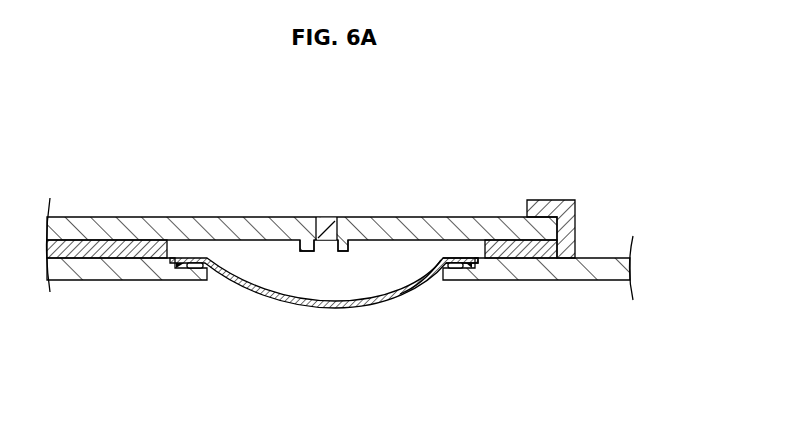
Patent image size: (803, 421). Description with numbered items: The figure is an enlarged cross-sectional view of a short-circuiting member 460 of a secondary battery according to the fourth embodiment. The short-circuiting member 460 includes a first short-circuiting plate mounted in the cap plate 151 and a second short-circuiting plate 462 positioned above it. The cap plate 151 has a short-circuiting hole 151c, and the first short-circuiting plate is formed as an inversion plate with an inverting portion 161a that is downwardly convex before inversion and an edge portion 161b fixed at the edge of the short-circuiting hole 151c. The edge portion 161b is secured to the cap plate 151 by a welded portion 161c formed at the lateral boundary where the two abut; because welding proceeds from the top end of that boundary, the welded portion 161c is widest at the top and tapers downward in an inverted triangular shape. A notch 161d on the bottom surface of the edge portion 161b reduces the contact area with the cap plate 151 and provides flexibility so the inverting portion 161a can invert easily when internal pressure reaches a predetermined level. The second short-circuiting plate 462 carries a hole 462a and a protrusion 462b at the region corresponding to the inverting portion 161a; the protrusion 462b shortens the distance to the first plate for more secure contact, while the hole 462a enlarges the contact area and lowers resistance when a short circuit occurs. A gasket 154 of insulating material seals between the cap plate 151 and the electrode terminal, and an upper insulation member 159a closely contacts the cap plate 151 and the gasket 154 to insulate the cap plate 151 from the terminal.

The short-circuiting member 460 is at (491, 151).
The second short-circuiting plate 462 is at (202, 211).
The hole 462a is at (341, 250).
The protrusion 462b is at (299, 251).
The gasket 154 is at (117, 248).
The upper insulation member 159a is at (553, 200).
The cap plate 151 is at (600, 268).
The short-circuiting hole 151c is at (420, 266).
The inverting portion 161a is at (385, 303).
The edge portion 161b is at (446, 257).
The welded portion 161c is at (467, 267).
The notch 161d is at (453, 269).